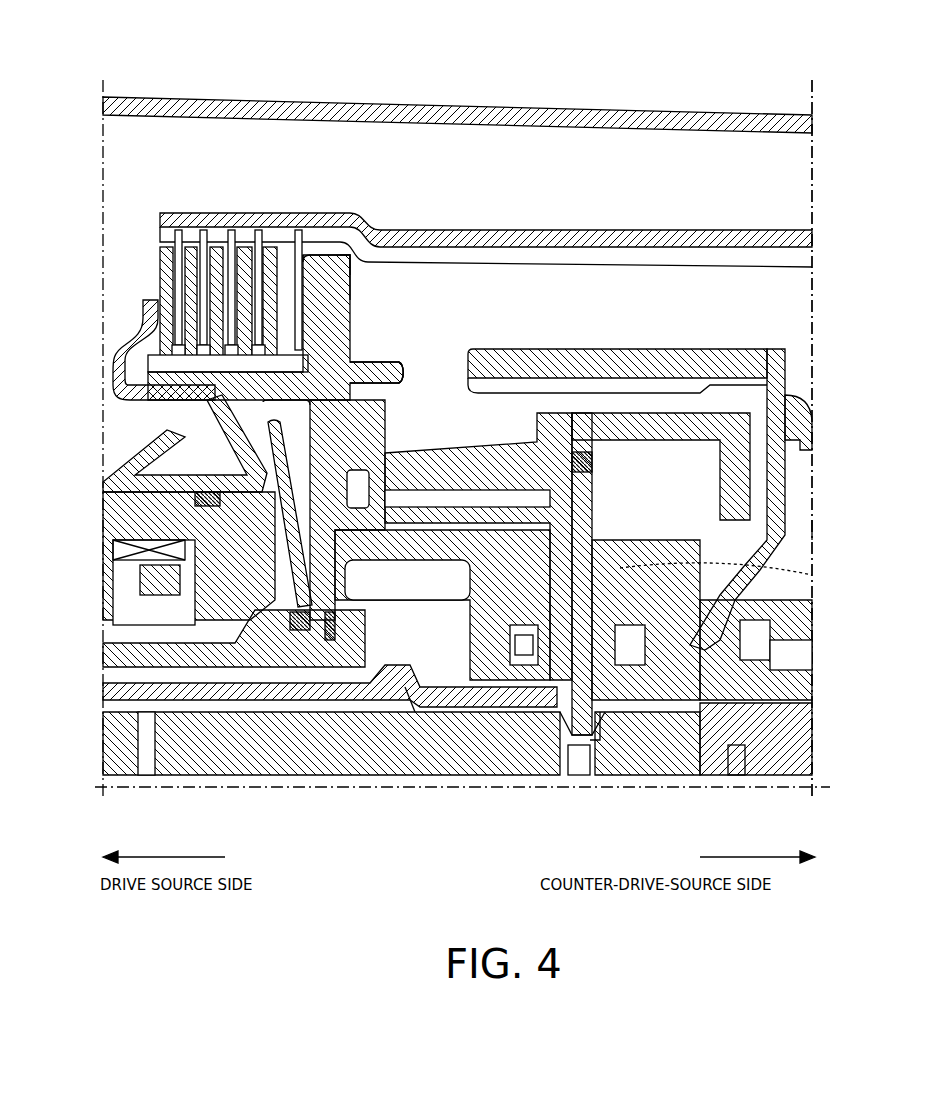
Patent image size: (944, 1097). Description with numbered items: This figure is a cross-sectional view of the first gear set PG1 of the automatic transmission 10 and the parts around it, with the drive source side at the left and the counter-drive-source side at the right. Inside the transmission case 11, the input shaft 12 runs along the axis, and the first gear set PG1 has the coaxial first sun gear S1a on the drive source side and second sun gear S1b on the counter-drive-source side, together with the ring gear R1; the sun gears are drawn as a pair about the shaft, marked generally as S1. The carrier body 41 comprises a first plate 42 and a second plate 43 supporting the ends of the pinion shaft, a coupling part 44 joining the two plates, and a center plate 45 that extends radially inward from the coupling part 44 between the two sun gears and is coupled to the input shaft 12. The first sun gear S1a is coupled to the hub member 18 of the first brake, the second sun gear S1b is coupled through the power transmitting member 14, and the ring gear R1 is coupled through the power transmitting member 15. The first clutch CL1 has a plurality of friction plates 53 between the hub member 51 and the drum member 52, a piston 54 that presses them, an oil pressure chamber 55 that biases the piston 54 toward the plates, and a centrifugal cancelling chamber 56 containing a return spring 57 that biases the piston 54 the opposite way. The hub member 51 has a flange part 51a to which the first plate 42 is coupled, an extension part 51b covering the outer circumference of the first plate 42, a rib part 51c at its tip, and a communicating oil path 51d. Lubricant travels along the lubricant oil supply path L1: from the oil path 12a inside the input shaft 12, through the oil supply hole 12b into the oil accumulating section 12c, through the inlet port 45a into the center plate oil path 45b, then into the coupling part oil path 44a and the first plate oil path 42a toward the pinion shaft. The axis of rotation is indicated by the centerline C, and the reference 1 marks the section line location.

The automatic transmission 10 is at (748, 46).
The transmission case 11 is at (712, 110).
The input shaft 12 is at (110, 745).
The oil path 12a is at (148, 790).
The oil supply hole 12b is at (576, 760).
The oil accumulating section 12c is at (600, 755).
The power transmitting member 14 is at (800, 722).
The power transmitting member 15 is at (790, 545).
The hub member 18 is at (110, 692).
The carrier body 41 is at (790, 430).
The first plate 42 is at (340, 520).
The first plate oil path 42a is at (340, 548).
The second plate 43 is at (720, 505).
The coupling part 44 is at (470, 450).
The coupling part oil path 44a is at (420, 492).
The center plate 45 is at (505, 585).
The inlet port 45a is at (575, 735).
The center plate oil path 45b is at (596, 500).
The hub member 51 is at (160, 380).
The flange part 51a is at (310, 600).
The extension part 51b is at (360, 362).
The rib part 51c is at (402, 378).
The communicating oil path 51d is at (352, 272).
The drum member 52 is at (318, 214).
The friction plates 53 is at (220, 247).
The piston 54 is at (148, 318).
The oil pressure chamber 55 is at (158, 455).
The centrifugal cancelling chamber 56 is at (150, 600).
The return spring 57 is at (150, 570).
The axis C is at (829, 440).
The first axis 1 is at (828, 530).
The lubricant oil supply path L1 is at (770, 570).
The ring gear R1 is at (645, 349).
The first gear set PG1 is at (700, 350).
The first clutch CL1 is at (352, 268).
The bearing S1 is at (458, 636).
The first sun gear S1a is at (408, 710).
The second sun gear S1b is at (680, 727).